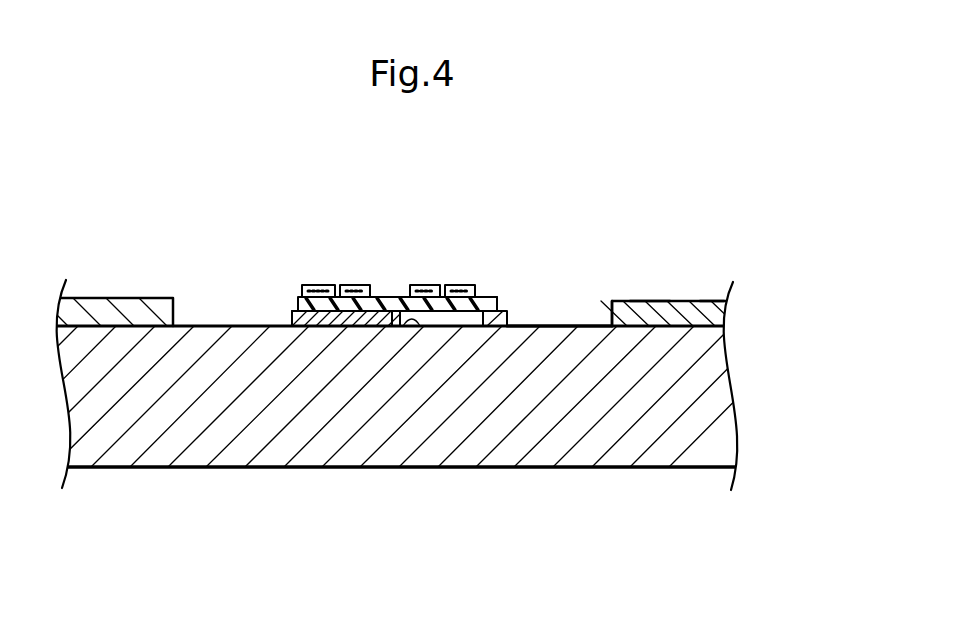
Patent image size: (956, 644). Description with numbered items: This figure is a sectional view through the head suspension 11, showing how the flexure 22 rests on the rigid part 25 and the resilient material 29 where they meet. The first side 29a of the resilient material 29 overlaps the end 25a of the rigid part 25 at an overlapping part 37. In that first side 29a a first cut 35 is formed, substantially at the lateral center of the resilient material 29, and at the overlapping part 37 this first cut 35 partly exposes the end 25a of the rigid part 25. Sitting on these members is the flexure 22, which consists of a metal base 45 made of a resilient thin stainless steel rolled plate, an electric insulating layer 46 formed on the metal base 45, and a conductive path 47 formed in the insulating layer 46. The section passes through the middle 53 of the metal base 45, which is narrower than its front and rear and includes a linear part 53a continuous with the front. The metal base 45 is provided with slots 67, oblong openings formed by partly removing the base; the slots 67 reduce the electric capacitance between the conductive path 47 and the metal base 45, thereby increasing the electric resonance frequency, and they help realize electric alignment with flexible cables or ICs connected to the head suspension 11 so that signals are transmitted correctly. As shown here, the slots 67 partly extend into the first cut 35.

The head suspension 11 is at (462, 193).
The flexure 22 is at (489, 292).
The rigid part 25 is at (477, 474).
The end of the rigid part 25a is at (566, 324).
The resilient material 29 is at (683, 297).
The first side of the resilient material 29a is at (648, 300).
The first cut 35 is at (606, 311).
The overlapping part 37 is at (710, 300).
The metal base 45 is at (389, 318).
The electric insulating layer 46 is at (478, 286).
The conductive path 47 is at (412, 286).
The middle of the metal base 53 is at (276, 312).
The linear part 53a is at (292, 309).
The slots 67 is at (413, 318).